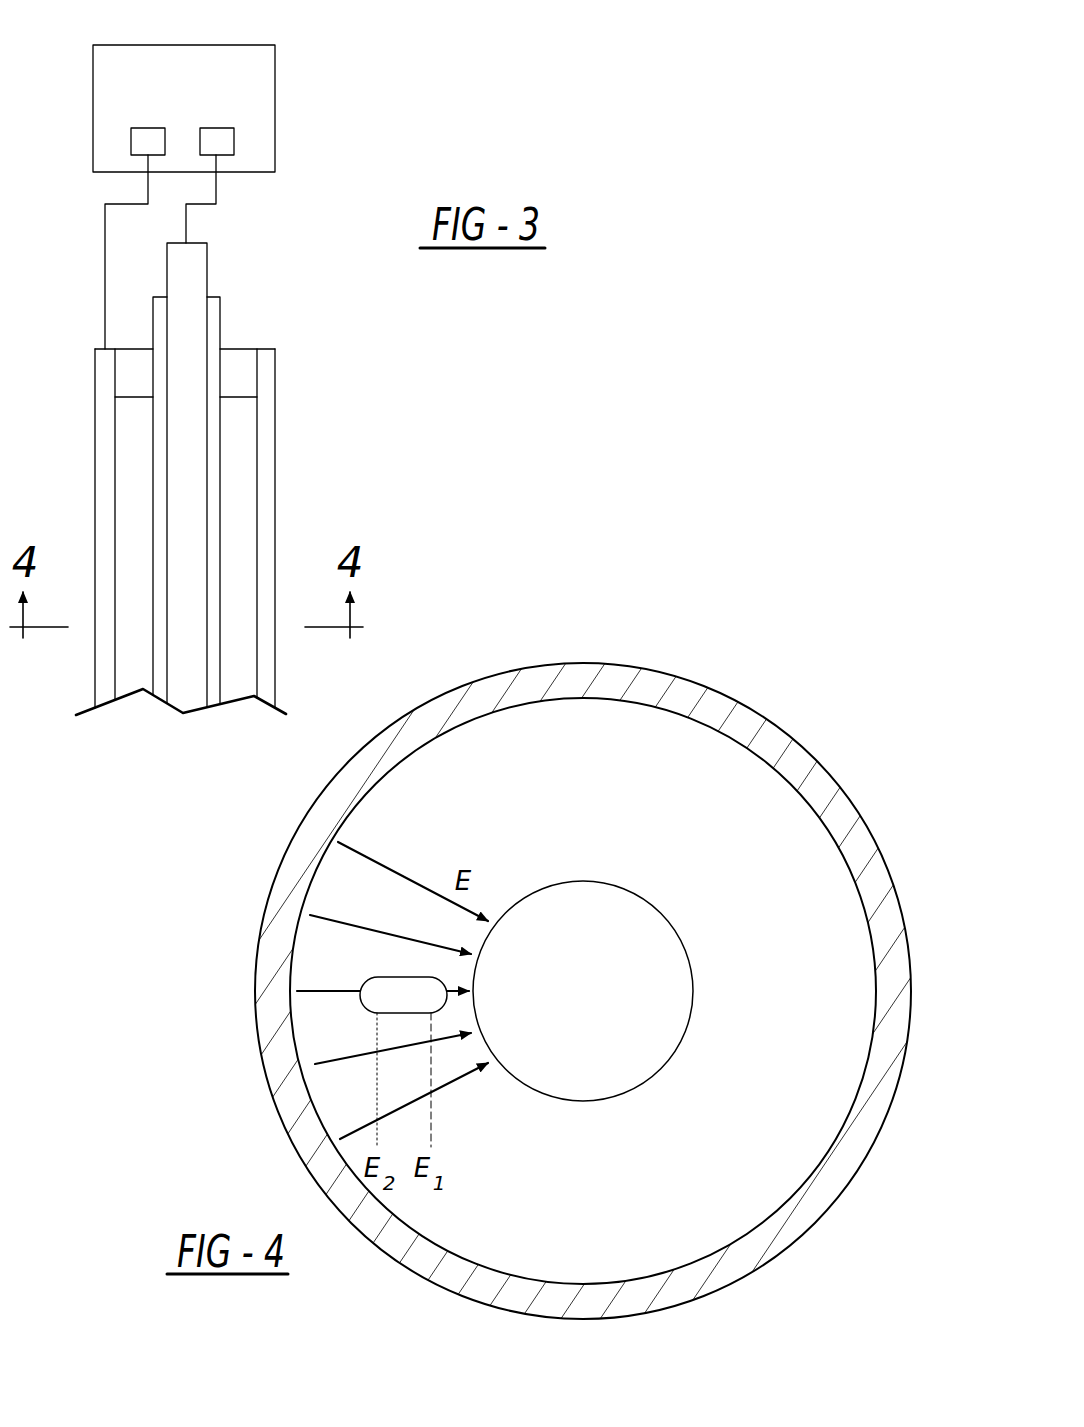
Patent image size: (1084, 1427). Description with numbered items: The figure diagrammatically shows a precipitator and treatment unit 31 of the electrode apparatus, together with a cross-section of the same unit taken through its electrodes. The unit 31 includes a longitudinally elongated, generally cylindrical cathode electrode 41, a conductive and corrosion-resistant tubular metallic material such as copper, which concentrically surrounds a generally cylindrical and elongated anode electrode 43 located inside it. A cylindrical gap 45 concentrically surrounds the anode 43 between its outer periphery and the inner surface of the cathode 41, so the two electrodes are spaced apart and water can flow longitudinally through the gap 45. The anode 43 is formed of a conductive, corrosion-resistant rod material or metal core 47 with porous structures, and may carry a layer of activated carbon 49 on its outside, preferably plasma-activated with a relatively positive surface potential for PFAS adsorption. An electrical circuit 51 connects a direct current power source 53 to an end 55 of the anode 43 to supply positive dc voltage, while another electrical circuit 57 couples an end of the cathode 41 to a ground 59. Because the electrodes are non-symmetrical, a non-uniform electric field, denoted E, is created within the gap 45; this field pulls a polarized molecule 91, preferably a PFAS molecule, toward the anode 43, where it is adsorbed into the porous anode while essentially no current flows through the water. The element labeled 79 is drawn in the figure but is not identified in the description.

In FIG. 3, the precipitator and treatment unit 31 is at (316, 397).
In FIG. 4, the precipitator and treatment unit 31 is at (791, 668).
In FIG. 3, the cathode electrode 41 is at (103, 440).
In FIG. 4, the cathode electrode 41 is at (542, 680).
In FIG. 3, the anode electrode 43 is at (185, 279).
In FIG. 4, the anode electrode 43 is at (660, 964).
In FIG. 3, the cylindrical gap 45 is at (235, 493).
In FIG. 4, the cylindrical gap 45 is at (622, 793).
In FIG. 3, the metal core 47 is at (188, 689).
In FIG. 3, the activated carbon layer 49 is at (213, 315).
In FIG. 3, the electrical circuit 51 is at (153, 44).
In FIG. 3, the direct current power source 53 is at (234, 140).
In FIG. 3, the end of anode 55 is at (193, 243).
In FIG. 3, the electrical circuit 57 is at (105, 258).
In FIG. 3, the ground 59 is at (131, 140).
In FIG. 3, the top of outer electrode 79 is at (267, 348).
In FIG. 4, the polarized molecule 91 is at (390, 978).